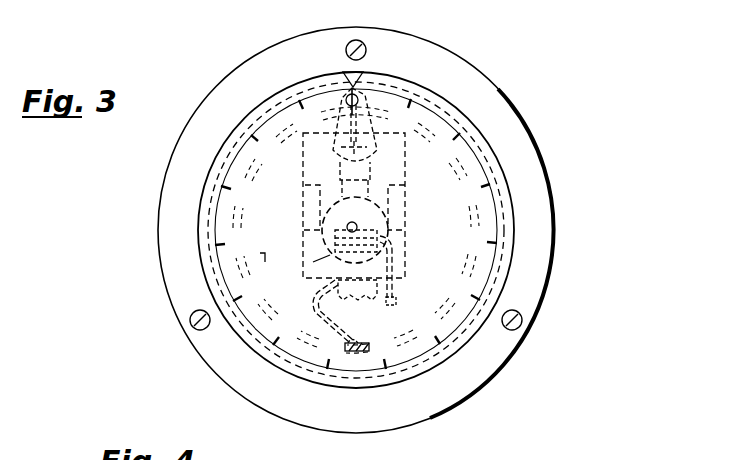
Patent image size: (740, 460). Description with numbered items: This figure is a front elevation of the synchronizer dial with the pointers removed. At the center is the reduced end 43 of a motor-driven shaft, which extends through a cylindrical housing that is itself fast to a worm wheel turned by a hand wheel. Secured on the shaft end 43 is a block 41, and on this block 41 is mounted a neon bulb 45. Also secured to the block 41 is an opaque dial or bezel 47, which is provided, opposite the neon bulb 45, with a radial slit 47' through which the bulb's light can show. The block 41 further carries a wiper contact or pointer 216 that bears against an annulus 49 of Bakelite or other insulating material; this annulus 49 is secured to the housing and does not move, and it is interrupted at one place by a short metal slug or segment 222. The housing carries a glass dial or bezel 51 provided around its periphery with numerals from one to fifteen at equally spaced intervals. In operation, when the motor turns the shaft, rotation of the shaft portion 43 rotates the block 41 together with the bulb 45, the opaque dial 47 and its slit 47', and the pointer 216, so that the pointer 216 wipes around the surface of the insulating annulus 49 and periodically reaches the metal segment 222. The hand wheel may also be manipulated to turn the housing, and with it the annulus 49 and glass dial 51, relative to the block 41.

The block 41 is at (381, 243).
The reduced end of shaft 43 is at (347, 235).
The neon bulb 45 is at (348, 86).
The opaque dial or bezel 47 is at (391, 230).
The radial slit 47' is at (410, 113).
The annulus 49 is at (238, 209).
The glass dial or bezel 51 is at (262, 254).
The wiper contact or pointer 216 is at (338, 323).
The metal slug or segment 222 is at (358, 352).